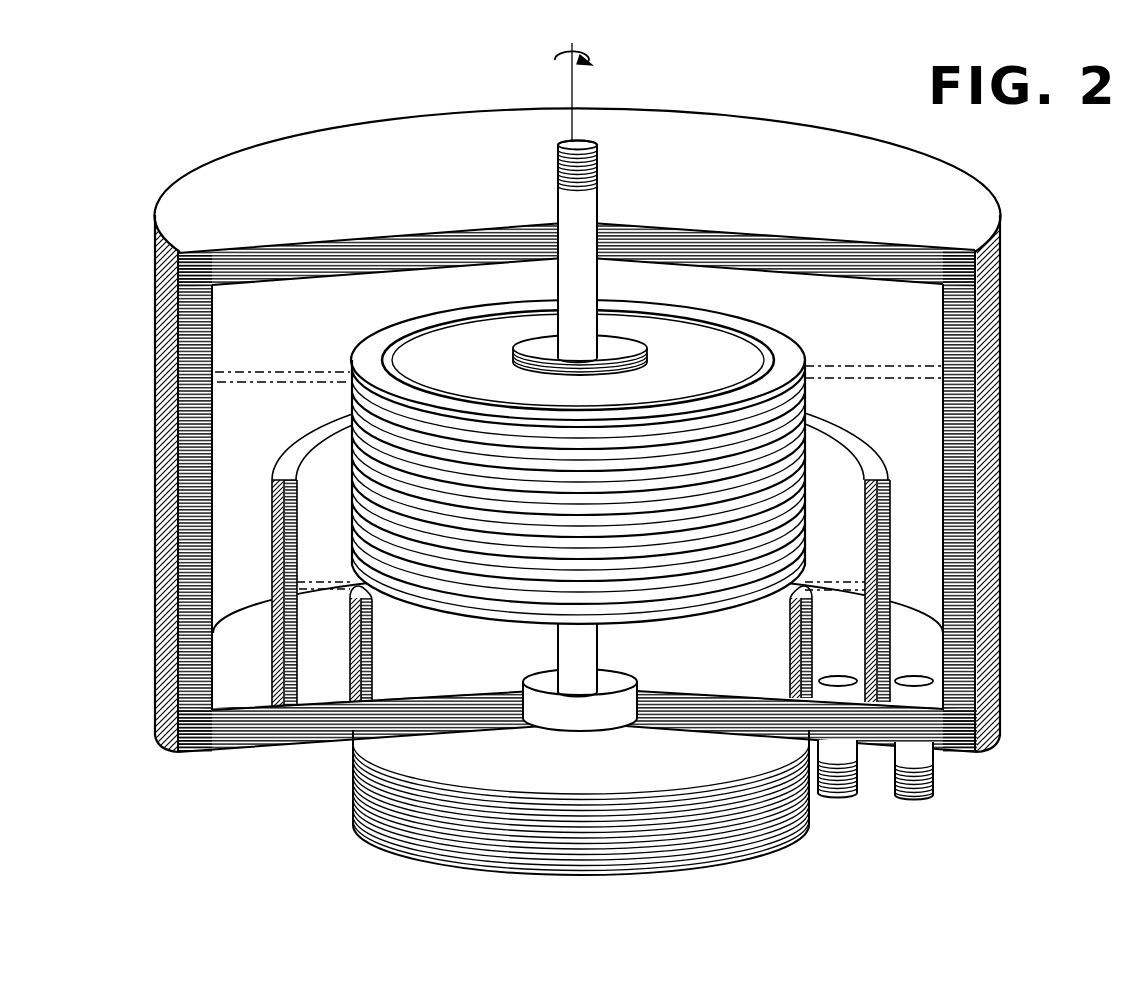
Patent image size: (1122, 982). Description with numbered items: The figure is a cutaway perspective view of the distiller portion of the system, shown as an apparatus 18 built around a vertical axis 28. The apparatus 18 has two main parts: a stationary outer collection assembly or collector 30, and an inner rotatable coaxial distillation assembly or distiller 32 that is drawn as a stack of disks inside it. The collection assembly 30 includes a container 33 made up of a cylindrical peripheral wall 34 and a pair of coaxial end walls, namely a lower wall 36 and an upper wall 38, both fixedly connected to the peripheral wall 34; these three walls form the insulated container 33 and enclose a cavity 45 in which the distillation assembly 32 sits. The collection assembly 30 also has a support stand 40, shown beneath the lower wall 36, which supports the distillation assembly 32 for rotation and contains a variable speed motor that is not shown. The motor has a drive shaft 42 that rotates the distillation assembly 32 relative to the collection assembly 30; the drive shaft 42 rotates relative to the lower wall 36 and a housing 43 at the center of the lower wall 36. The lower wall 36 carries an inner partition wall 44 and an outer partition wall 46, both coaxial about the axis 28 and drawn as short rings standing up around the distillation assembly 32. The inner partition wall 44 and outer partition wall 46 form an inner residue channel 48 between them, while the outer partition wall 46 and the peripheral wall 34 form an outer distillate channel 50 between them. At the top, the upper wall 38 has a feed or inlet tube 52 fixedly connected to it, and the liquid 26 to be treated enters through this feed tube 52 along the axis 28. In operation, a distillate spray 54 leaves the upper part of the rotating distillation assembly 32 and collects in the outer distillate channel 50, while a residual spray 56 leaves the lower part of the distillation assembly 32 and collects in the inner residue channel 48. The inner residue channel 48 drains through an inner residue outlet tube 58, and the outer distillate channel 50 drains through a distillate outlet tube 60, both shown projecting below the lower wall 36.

The apparatus 18 is at (793, 104).
The liquid 26 is at (572, 92).
The vertical axis 28 is at (592, 64).
The collection assembly 30 is at (925, 153).
The distillation assembly 32 is at (373, 331).
The container 33 is at (155, 519).
The peripheral wall 34 is at (157, 570).
The lower wall 36 is at (258, 738).
The upper wall 38 is at (255, 273).
The support stand 40 is at (462, 844).
The drive shaft 42 is at (580, 653).
The housing 43 is at (545, 706).
The inner partition wall 44 is at (790, 648).
The cavity 45 is at (257, 318).
The outer partition wall 46 is at (928, 440).
The inner residue channel 48 is at (838, 668).
The outer distillate channel 50 is at (914, 668).
The feed tube 52 is at (572, 207).
The distillate spray 54 is at (855, 363).
The residual spray 56 is at (343, 540).
The inner residue outlet tube 58 is at (826, 795).
The distillate outlet tube 60 is at (905, 795).